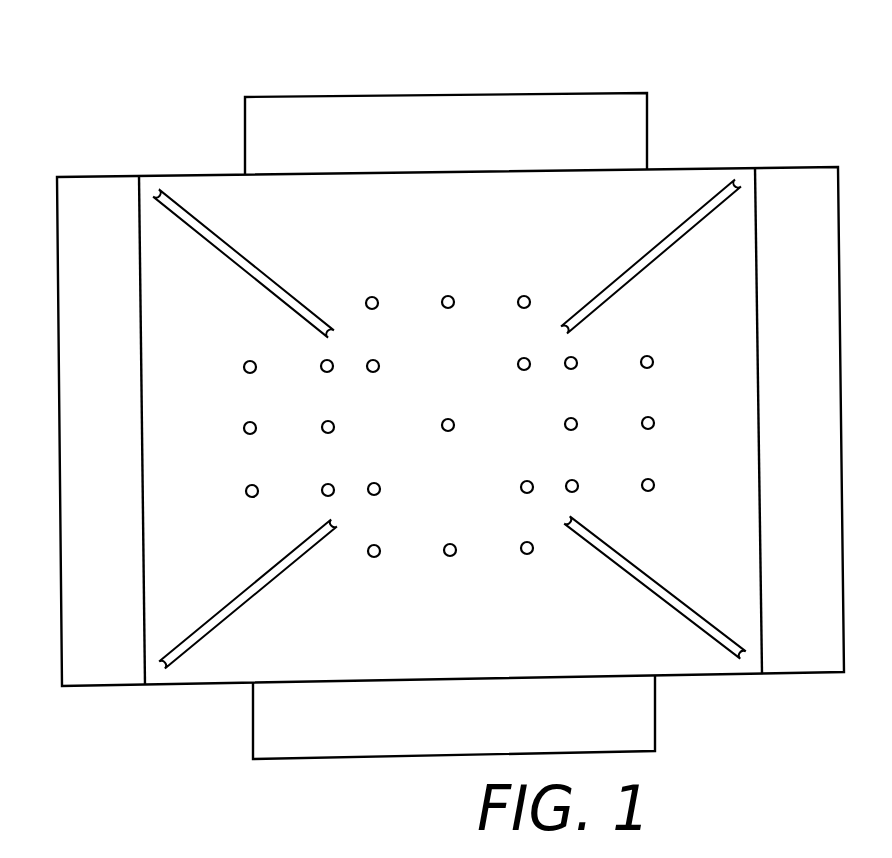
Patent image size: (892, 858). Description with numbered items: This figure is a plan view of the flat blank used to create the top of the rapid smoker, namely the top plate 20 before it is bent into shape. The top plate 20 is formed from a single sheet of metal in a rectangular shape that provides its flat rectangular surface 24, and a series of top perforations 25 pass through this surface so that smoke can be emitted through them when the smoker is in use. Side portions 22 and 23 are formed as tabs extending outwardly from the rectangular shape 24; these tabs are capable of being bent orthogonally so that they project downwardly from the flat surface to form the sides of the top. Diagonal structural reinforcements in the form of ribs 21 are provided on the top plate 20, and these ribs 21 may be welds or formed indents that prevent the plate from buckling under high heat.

The top plate 20 is at (183, 116).
The ribs 21 is at (713, 195).
The side portion 22 is at (647, 119).
The side portion 23 is at (108, 176).
The flat rectangular surface 24 is at (430, 193).
The top perforations 25 is at (653, 362).